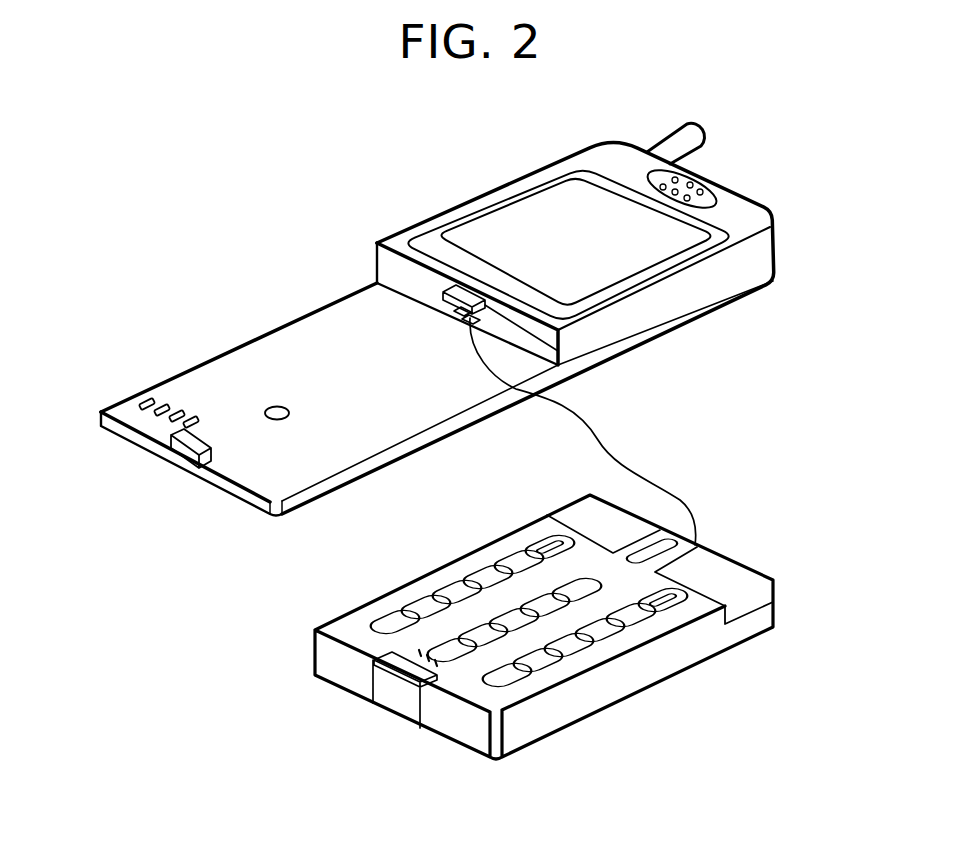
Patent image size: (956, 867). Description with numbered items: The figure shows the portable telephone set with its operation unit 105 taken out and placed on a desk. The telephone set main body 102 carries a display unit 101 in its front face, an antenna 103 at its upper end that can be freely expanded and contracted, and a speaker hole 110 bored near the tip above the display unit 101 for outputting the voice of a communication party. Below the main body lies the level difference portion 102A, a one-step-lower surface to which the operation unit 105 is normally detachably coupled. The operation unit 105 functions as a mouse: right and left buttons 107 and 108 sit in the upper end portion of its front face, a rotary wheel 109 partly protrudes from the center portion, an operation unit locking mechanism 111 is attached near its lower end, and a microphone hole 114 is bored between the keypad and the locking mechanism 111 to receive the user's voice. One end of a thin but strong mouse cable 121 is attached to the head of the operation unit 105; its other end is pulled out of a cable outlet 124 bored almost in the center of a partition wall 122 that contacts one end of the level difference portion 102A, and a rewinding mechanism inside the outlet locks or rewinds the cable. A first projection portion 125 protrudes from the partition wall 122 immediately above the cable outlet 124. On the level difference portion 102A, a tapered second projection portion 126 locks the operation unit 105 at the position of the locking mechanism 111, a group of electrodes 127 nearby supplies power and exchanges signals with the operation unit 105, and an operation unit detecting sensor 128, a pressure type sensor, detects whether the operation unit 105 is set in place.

The display unit 101 is at (522, 213).
The telephone set main body 102 is at (690, 307).
The level difference portion 102A is at (440, 433).
The antenna 103 is at (672, 138).
The operation unit 105 is at (632, 703).
The right button 107 is at (737, 579).
The left button 108 is at (578, 511).
The rotary wheel 109 is at (680, 550).
The speaker hole 110 is at (701, 182).
The operation unit locking mechanism 111 is at (403, 703).
The microphone hole 114 is at (417, 653).
The mouse cable 121 is at (627, 468).
The partition wall 122 is at (377, 262).
The cable outlet 124 is at (453, 315).
The first projection portion 125 is at (579, 368).
The second projection portion 126 is at (185, 455).
The group of electrodes 127 is at (206, 413).
The operation unit detecting sensor 128 is at (278, 405).